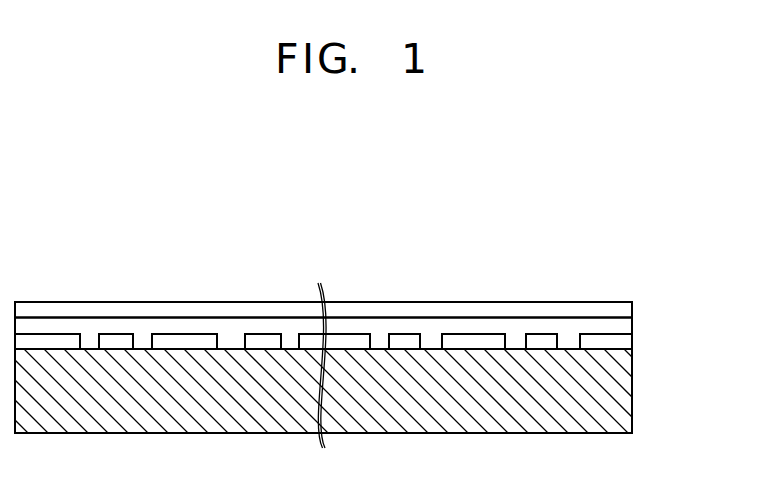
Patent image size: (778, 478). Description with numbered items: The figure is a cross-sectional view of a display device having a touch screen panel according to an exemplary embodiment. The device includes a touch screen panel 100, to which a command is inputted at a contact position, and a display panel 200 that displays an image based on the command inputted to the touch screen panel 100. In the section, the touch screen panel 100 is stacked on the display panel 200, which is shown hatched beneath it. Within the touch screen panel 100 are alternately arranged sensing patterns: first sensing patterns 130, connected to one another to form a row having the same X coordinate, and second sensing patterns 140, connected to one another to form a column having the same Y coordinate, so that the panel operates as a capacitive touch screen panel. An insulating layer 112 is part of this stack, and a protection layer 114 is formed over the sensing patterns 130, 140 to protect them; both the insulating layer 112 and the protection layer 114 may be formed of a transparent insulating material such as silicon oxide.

The touch screen panel 100 is at (384, 300).
The insulating layer 112 is at (625, 326).
The protection layer 114 is at (625, 308).
The first sensing patterns 130 is at (472, 342).
The second sensing patterns 140 is at (540, 342).
The display panel 200 is at (625, 390).